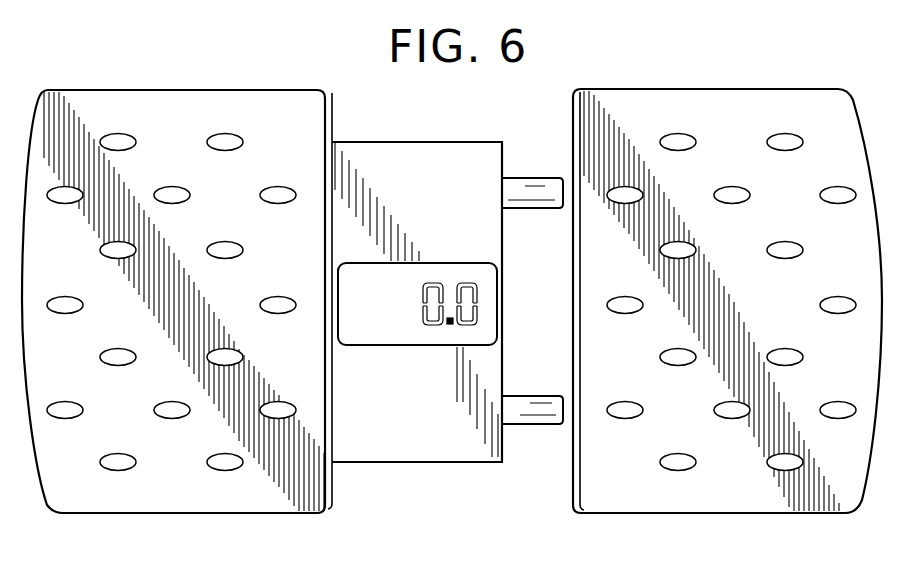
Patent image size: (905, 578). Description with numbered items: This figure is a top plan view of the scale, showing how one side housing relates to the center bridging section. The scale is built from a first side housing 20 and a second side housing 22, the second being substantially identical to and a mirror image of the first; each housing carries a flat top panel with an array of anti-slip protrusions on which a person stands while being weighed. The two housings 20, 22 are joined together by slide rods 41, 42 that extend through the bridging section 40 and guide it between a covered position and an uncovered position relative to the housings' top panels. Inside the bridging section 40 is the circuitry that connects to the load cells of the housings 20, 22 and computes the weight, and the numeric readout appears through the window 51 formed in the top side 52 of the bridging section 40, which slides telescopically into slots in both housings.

The first side housing 20 is at (218, 507).
The second side housing 22 is at (631, 507).
The bridging section 40 is at (408, 450).
The slide rod 41 is at (542, 182).
The slide rod 42 is at (538, 410).
The window 51 is at (405, 340).
The top side 52 is at (413, 162).